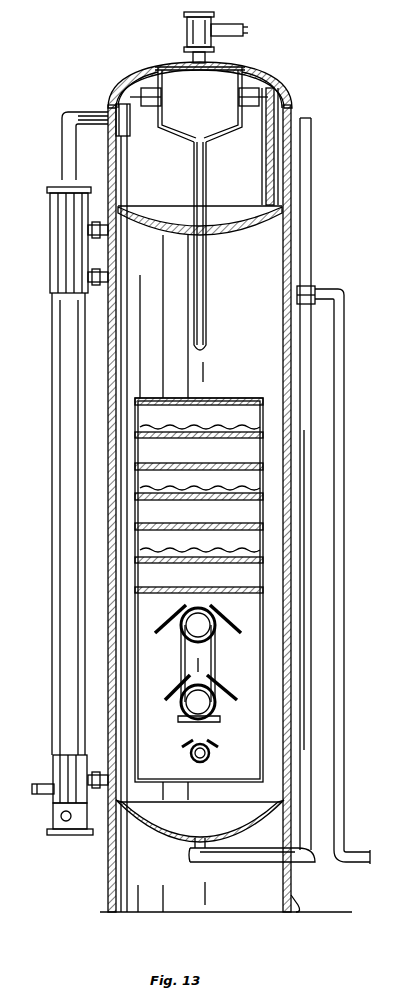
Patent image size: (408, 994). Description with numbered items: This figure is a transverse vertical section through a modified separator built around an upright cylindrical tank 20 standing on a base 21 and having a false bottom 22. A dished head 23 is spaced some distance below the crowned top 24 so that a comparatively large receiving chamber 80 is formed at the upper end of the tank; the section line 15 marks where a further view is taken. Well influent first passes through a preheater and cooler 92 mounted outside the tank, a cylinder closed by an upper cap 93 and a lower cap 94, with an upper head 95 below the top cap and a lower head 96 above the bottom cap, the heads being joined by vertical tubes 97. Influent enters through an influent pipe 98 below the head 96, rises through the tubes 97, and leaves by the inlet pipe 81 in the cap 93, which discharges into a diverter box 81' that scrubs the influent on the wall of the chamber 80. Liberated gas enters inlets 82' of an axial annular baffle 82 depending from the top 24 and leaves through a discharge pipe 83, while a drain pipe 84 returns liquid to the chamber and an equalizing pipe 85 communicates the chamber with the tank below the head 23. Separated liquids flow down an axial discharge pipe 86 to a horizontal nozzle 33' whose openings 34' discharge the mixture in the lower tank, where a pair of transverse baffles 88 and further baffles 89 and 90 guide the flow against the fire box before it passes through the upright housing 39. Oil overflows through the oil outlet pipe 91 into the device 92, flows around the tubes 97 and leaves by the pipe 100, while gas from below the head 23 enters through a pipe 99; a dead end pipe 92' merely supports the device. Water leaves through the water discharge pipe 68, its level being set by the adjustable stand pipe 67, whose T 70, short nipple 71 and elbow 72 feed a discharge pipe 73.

The section line 15 is at (108, 96).
The upright cylindrical tank 20 is at (283, 352).
The base 21 is at (300, 905).
The false bottom 22 is at (175, 835).
The dished head 23 is at (232, 232).
The crowned top 24 is at (282, 72).
The horizontal discharge nozzle 33' is at (170, 771).
The openings 34' is at (230, 771).
The upright housing 39 is at (140, 665).
The adjustable stand pipe 67 is at (304, 485).
The water discharge pipe 68 is at (215, 863).
The T 70 is at (312, 290).
The short nipple 71 is at (310, 310).
The elbow 72 is at (344, 294).
The discharge pipe 73 is at (340, 648).
The receiving chamber 80 is at (262, 160).
The inlet pipe 81 is at (66, 146).
The diverter box 81' is at (133, 134).
The axial annular baffle 82 is at (200, 116).
The inlets 82' is at (199, 104).
The discharge pipe 83 is at (245, 30).
The drain pipe 84 is at (206, 192).
The equalizing pipe 85 is at (275, 150).
The axial discharge pipe 86 is at (206, 300).
The transverse baffles 88 is at (210, 742).
The baffles 89 is at (220, 690).
The baffles 90 is at (222, 612).
The oil outlet pipe 91 is at (92, 300).
The preheater and cooler 92 is at (51, 524).
The dead end pipe 92' is at (141, 811).
The cap 93 is at (48, 192).
The cap 94 is at (70, 835).
The head 95 is at (52, 232).
The head 96 is at (55, 818).
The vertical tubes 97 is at (55, 295).
The influent pipe 98 is at (50, 833).
The pipe 99 is at (100, 240).
The pipe 100 is at (36, 784).